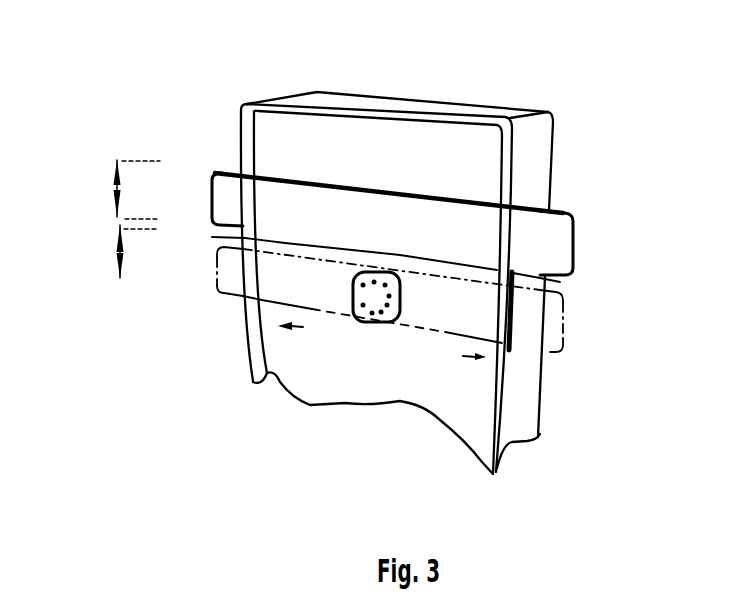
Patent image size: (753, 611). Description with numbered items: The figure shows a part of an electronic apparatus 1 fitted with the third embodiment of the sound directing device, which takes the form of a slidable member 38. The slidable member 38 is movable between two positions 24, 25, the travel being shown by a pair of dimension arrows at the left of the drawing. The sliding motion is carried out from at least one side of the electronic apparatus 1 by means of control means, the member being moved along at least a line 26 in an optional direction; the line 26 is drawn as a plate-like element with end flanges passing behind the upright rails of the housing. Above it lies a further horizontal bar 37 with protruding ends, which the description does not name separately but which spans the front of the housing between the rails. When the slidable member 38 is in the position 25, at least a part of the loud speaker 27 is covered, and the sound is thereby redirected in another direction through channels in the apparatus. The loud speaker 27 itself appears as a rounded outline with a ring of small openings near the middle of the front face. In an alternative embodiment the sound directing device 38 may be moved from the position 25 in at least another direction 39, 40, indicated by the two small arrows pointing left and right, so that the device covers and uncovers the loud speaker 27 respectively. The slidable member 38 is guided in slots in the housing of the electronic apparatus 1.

The electronic apparatus 1 is at (590, 70).
The position 24 is at (113, 188).
The position 25 is at (115, 253).
The line 26 is at (212, 237).
The loud speaker 27 is at (372, 322).
The latch bar 37 is at (226, 176).
The slidable member 38 is at (415, 210).
The direction 39 is at (320, 335).
The direction 40 is at (428, 350).